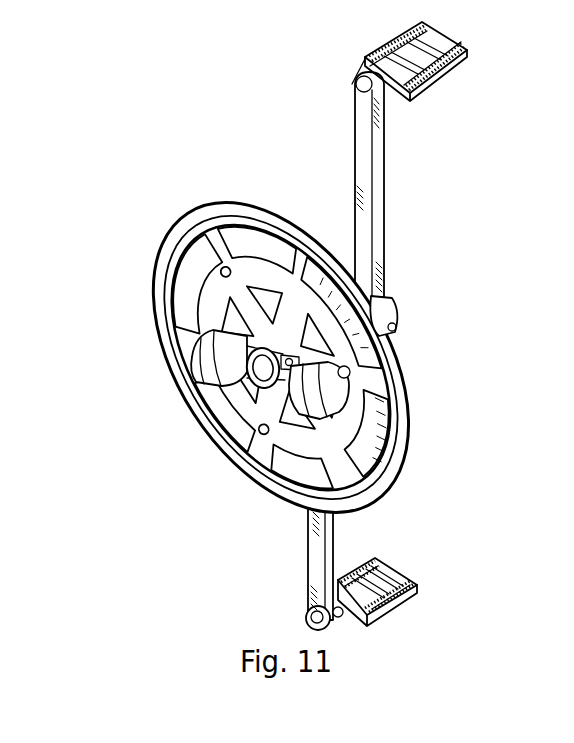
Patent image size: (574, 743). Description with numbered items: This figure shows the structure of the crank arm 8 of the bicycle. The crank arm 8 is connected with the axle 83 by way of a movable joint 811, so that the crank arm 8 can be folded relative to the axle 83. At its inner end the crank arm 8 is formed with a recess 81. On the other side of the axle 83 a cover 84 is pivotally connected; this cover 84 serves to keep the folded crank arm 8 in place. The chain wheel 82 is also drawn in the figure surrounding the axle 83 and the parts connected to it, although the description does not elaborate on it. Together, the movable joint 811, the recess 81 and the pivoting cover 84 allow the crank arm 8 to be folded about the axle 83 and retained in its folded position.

The crank arm 8 is at (363, 168).
The recess 81 is at (303, 412).
The movable joint 811 is at (289, 358).
The chain wheel rim 82 is at (400, 410).
The axle 83 is at (240, 293).
The cover 84 is at (198, 348).